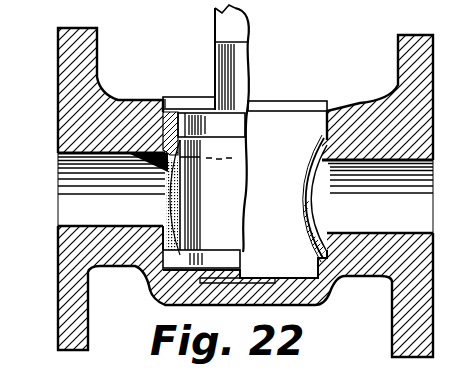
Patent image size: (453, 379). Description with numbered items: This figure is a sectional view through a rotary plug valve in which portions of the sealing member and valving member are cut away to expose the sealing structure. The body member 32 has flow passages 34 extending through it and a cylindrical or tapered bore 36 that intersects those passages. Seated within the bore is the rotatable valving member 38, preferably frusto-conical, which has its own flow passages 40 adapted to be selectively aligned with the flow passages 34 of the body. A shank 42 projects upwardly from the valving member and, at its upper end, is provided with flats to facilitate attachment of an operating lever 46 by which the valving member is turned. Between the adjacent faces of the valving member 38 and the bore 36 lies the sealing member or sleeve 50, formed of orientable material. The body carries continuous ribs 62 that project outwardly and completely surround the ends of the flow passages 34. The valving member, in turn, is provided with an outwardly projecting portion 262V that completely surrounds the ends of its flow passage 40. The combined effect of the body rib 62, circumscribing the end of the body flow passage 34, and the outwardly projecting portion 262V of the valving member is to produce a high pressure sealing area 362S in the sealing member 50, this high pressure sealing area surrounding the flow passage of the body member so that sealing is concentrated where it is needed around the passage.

The body member 32 is at (116, 266).
The flow passages 34 is at (66, 203).
The bore 36 is at (443, 233).
The operating lever 46 is at (443, 255).
The rotatable valving member 38 is at (243, 182).
The flow passages 40 is at (243, 159).
The shank 42 is at (242, 75).
The sealing member or sleeve 50 is at (167, 203).
The continuous ribs 62 is at (309, 142).
The high pressure sealing area 362S is at (178, 212).
The outwardly projecting portion 262V is at (180, 236).